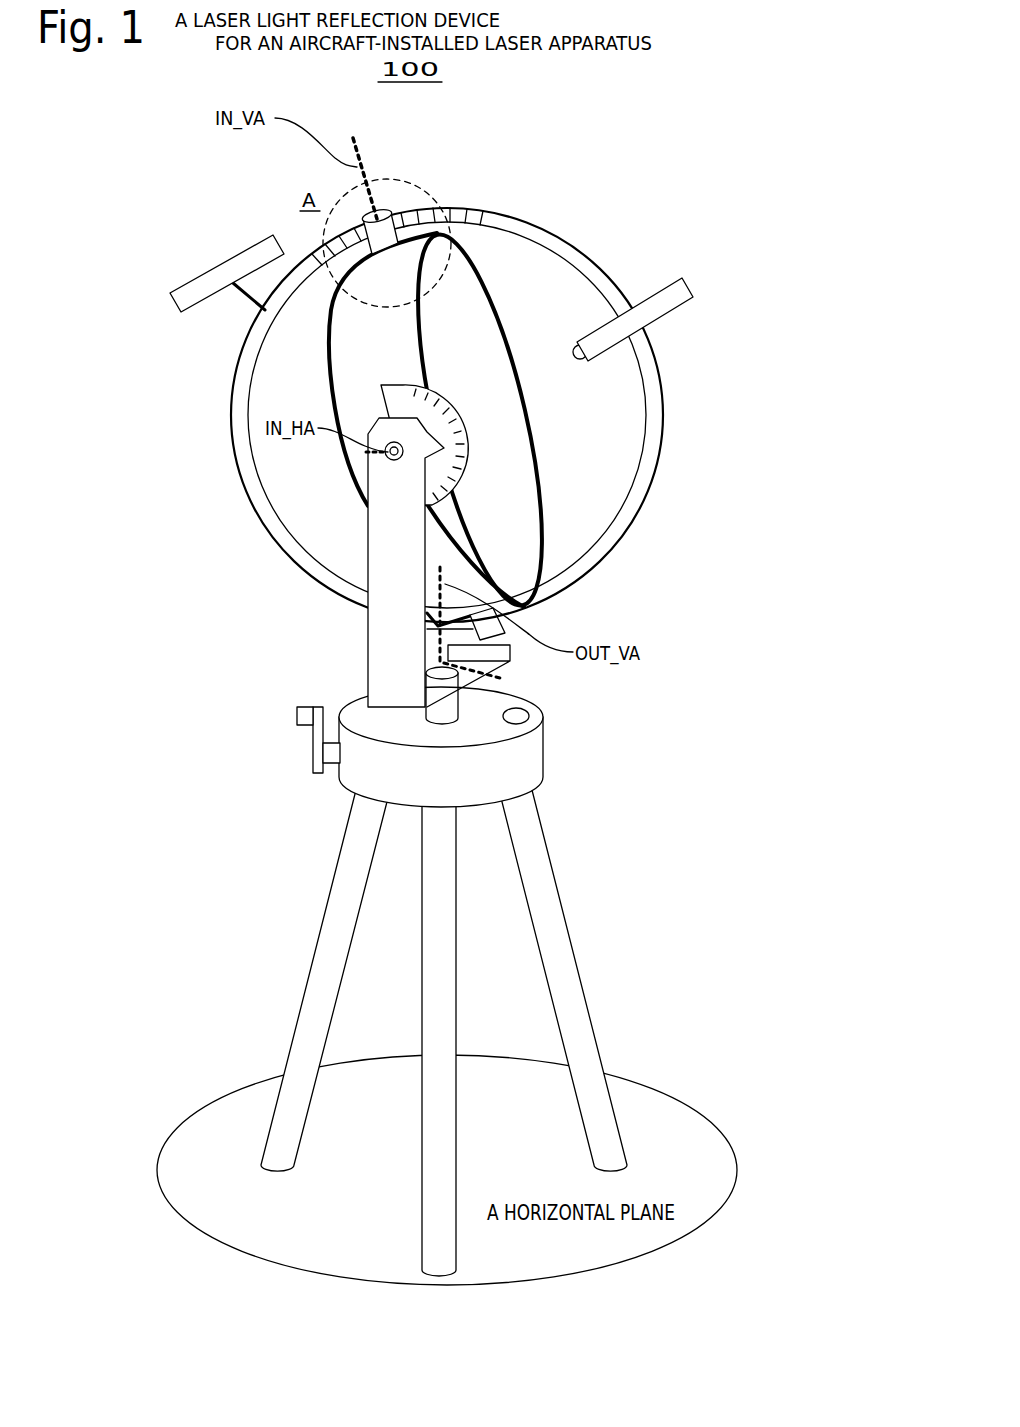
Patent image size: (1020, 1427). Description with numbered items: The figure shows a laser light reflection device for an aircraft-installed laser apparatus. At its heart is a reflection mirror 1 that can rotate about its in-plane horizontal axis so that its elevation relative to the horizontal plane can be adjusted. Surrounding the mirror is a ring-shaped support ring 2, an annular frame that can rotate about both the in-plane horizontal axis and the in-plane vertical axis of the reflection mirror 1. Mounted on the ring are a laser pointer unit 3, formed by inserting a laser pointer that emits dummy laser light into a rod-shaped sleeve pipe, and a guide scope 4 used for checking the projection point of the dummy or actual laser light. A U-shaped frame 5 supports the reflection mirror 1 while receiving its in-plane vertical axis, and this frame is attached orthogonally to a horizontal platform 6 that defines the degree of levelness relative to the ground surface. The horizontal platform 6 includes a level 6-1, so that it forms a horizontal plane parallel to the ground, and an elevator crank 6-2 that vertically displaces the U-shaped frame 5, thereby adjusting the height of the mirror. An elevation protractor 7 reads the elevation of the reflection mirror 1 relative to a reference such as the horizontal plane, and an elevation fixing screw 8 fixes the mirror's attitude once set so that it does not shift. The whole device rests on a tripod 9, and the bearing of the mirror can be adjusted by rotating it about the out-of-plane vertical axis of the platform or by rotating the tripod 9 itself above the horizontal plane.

The reflection mirror 1 is at (480, 383).
The support ring 2 is at (652, 400).
The laser pointer unit 3 is at (650, 310).
The guide scope 4 is at (237, 263).
The U-shaped frame 5 is at (383, 585).
The horizontal platform 6 is at (530, 750).
The level 6-1 is at (516, 716).
The elevator crank 6-2 is at (313, 745).
The elevation protractor 7 is at (400, 403).
The elevation fixing screw 8 is at (388, 457).
The tripod 9 is at (534, 839).